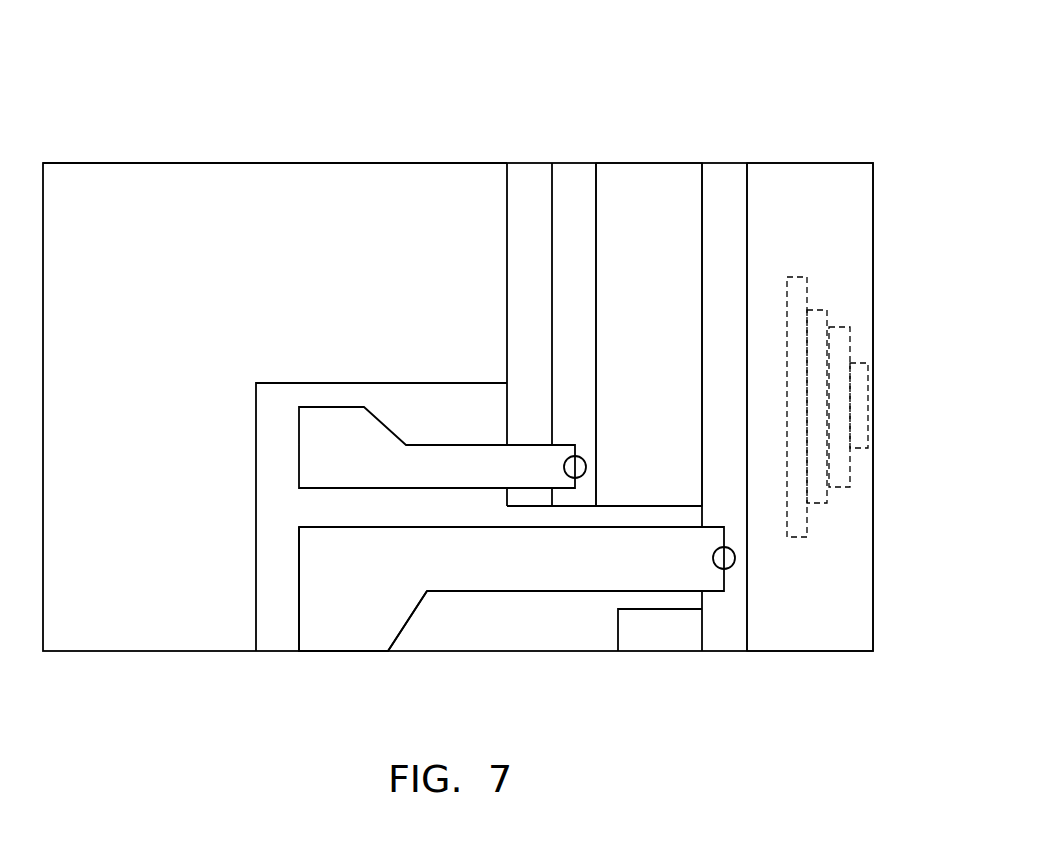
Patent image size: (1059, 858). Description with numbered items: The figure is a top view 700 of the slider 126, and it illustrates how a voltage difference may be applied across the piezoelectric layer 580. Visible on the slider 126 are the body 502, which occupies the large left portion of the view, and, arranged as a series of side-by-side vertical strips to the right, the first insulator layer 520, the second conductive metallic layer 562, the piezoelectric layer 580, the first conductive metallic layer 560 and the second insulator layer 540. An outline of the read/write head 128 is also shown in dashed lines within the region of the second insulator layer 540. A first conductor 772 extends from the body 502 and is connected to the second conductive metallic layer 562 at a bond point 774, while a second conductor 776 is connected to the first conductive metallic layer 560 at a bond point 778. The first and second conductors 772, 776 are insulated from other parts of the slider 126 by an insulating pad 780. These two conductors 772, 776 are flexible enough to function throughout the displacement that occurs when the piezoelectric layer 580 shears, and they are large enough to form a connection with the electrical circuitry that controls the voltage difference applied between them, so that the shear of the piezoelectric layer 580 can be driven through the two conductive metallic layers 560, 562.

The top view 700 is at (692, 100).
The body 502 is at (153, 269).
The slider 126 is at (326, 163).
The first insulator layer 520 is at (526, 163).
The second conductive metallic layer 562 is at (579, 163).
The piezoelectric layer 580 is at (649, 163).
The first conductive metallic layer 560 is at (722, 163).
The second insulator layer 540 is at (803, 163).
The read/write head 128 is at (875, 400).
The first conductor 772 is at (326, 415).
The bond point 774 is at (577, 462).
The second conductor 776 is at (347, 652).
The bond point 778 is at (728, 558).
The insulating pad 780 is at (457, 652).